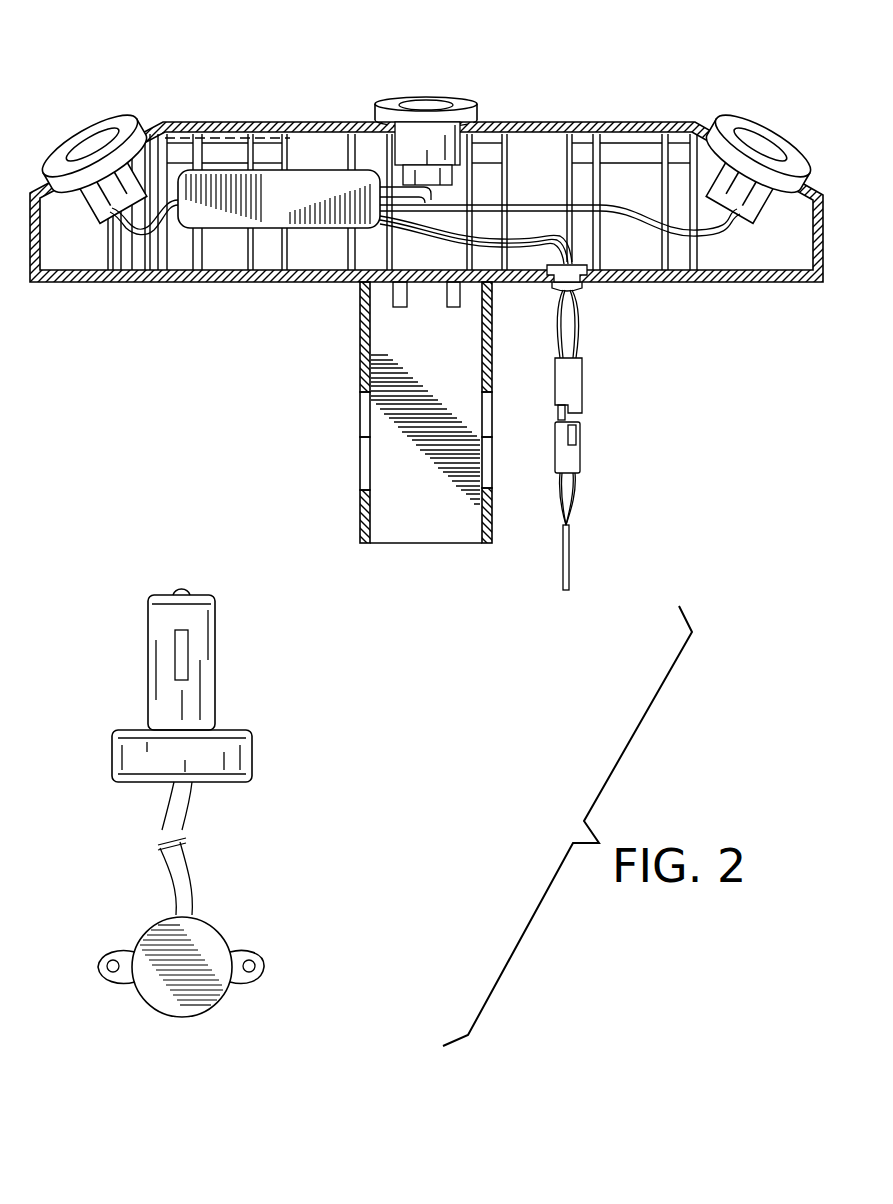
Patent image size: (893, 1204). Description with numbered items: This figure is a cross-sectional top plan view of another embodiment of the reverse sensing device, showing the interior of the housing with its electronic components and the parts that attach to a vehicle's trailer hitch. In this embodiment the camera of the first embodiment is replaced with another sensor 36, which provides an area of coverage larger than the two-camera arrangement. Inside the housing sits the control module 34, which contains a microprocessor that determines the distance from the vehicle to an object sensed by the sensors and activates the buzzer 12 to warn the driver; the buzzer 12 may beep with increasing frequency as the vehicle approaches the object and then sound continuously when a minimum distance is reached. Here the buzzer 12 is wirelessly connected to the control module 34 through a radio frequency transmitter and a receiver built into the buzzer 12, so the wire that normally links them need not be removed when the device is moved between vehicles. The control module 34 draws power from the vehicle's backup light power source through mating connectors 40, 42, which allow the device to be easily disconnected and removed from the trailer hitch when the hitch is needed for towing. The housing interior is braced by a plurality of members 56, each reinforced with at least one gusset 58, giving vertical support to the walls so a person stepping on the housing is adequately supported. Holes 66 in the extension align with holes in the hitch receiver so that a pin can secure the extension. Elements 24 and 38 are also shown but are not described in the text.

The buzzer 12 is at (218, 930).
The lamp holder 24 is at (118, 127).
The control module 34 is at (235, 210).
The sensor 36 is at (430, 97).
The lamp 38 is at (215, 662).
The connector 40 is at (575, 377).
The mating connector 42 is at (572, 458).
The member 56 is at (180, 262).
The gusset 58 is at (263, 264).
The hole 66 is at (358, 468).